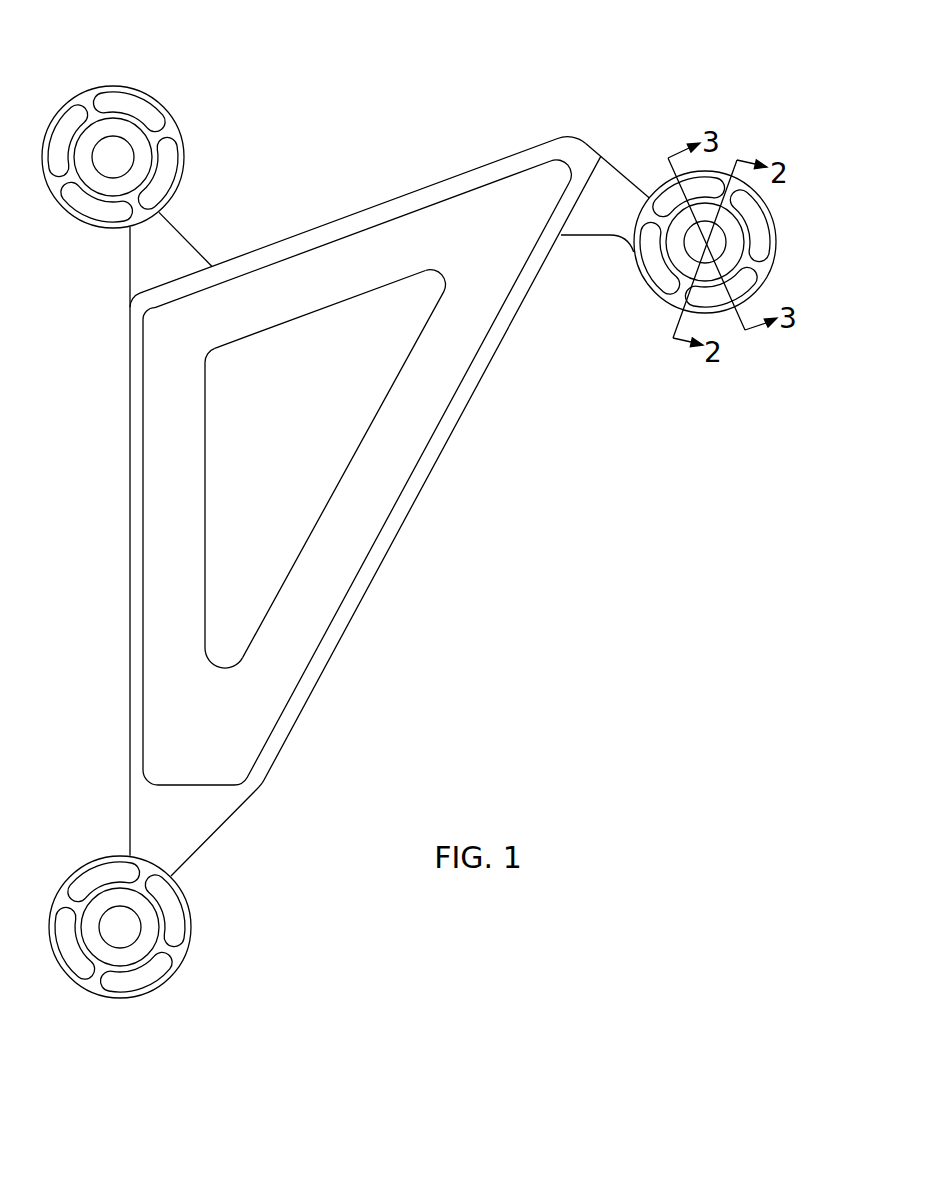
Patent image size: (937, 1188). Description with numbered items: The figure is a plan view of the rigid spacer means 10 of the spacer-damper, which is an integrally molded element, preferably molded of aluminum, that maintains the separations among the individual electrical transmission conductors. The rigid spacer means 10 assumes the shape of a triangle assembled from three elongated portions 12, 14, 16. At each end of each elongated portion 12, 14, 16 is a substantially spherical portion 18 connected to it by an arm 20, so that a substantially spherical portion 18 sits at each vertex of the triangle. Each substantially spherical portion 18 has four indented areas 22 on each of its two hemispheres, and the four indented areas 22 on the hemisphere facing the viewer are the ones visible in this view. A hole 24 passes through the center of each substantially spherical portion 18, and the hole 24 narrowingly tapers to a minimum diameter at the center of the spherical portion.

The rigid spacer means 10 is at (429, 539).
The elongated portion 12 is at (180, 494).
The elongated portion 14 is at (359, 272).
The elongated portion 16 is at (395, 450).
The substantially spherical portion 18 is at (90, 100).
The arm 20 is at (152, 259).
The indented area 22 is at (167, 173).
The hole 24 is at (118, 157).